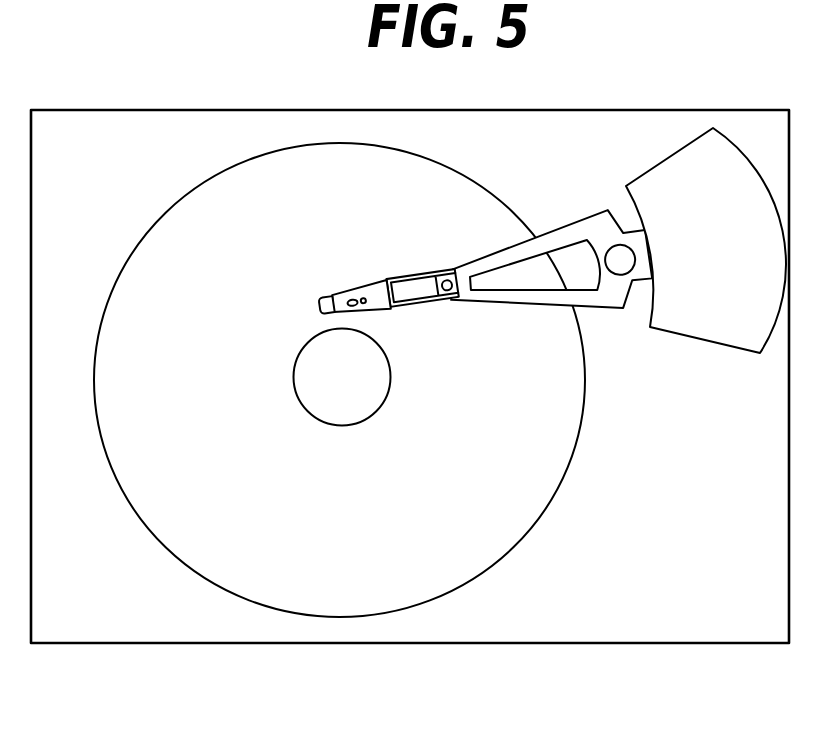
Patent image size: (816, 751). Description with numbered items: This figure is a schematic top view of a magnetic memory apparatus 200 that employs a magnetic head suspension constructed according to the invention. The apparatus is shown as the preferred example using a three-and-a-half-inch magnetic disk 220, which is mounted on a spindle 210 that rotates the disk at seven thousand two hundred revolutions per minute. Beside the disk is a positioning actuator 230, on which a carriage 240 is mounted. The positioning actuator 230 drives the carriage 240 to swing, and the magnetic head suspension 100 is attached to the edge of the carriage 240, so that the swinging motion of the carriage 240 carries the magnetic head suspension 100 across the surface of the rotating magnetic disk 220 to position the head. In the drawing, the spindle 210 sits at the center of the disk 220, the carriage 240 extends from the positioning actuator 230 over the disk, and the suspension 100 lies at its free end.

The magnetic head suspension 100 is at (410, 292).
The magnetic memory apparatus 200 is at (110, 610).
The spindle 210 is at (325, 375).
The magnetic disk 220 is at (310, 590).
The positioning actuator 230 is at (707, 317).
The carriage 240 is at (605, 309).